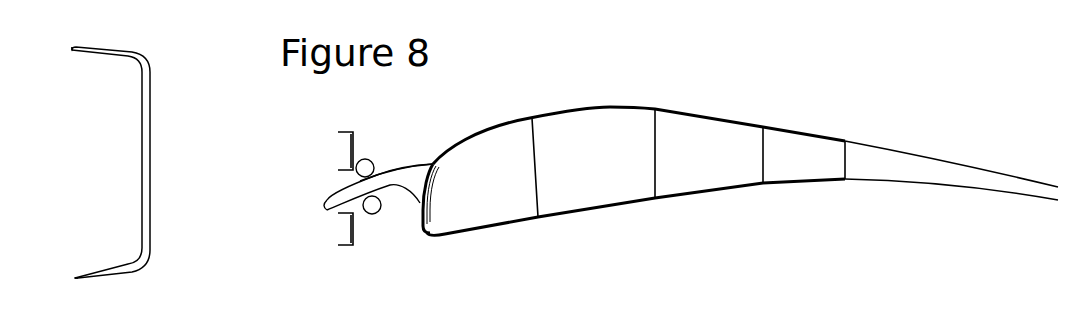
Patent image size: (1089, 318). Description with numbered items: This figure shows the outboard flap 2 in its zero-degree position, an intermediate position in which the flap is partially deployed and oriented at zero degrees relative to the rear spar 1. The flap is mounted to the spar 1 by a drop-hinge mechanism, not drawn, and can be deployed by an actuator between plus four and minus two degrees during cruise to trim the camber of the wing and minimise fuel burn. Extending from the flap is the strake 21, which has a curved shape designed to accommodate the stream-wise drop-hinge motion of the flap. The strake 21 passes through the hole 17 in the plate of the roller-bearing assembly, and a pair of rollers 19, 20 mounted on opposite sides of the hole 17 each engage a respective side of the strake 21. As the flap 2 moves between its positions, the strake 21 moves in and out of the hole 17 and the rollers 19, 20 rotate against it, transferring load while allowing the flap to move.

The rear spar 1 is at (143, 157).
The outboard flap 2 is at (803, 107).
The hole 17 is at (345, 177).
The roller 19 is at (378, 209).
The roller 20 is at (370, 161).
The strake 21 is at (383, 175).